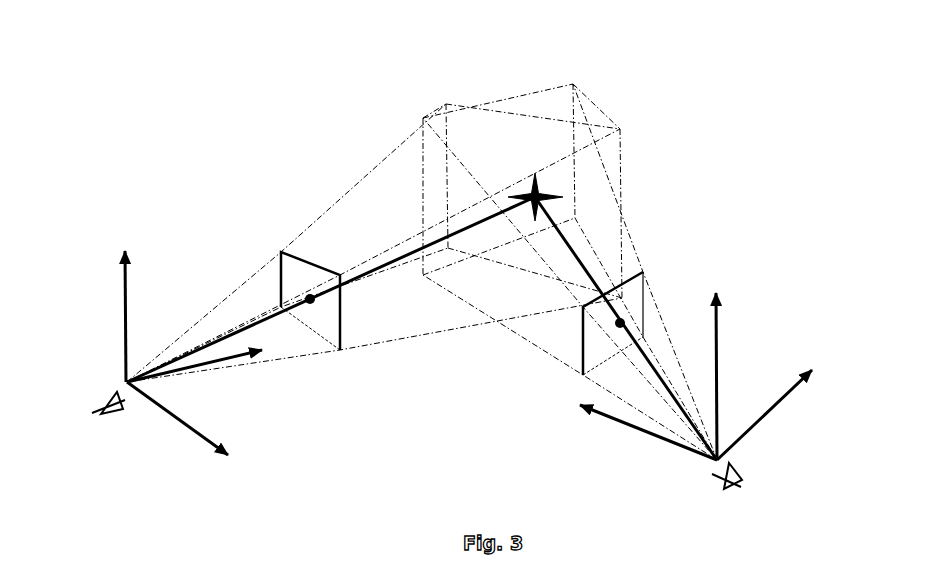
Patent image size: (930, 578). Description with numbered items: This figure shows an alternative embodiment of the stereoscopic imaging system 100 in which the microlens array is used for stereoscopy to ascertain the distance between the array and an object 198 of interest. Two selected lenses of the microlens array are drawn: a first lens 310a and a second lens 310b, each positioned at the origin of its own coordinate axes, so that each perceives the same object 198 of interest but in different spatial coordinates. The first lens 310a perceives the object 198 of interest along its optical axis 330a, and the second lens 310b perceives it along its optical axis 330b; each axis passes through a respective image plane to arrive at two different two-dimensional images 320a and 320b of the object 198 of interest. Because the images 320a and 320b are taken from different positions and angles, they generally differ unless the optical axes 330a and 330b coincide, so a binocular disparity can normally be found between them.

The stereoscopic imaging system 100 is at (831, 40).
The object of interest 198 is at (543, 205).
The first lens 310a is at (97, 401).
The second lens 310b is at (747, 473).
The two-dimensional image 320a is at (278, 274).
The two-dimensional image 320b is at (643, 275).
The optical axis 330a is at (407, 257).
The optical axis 330b is at (592, 273).